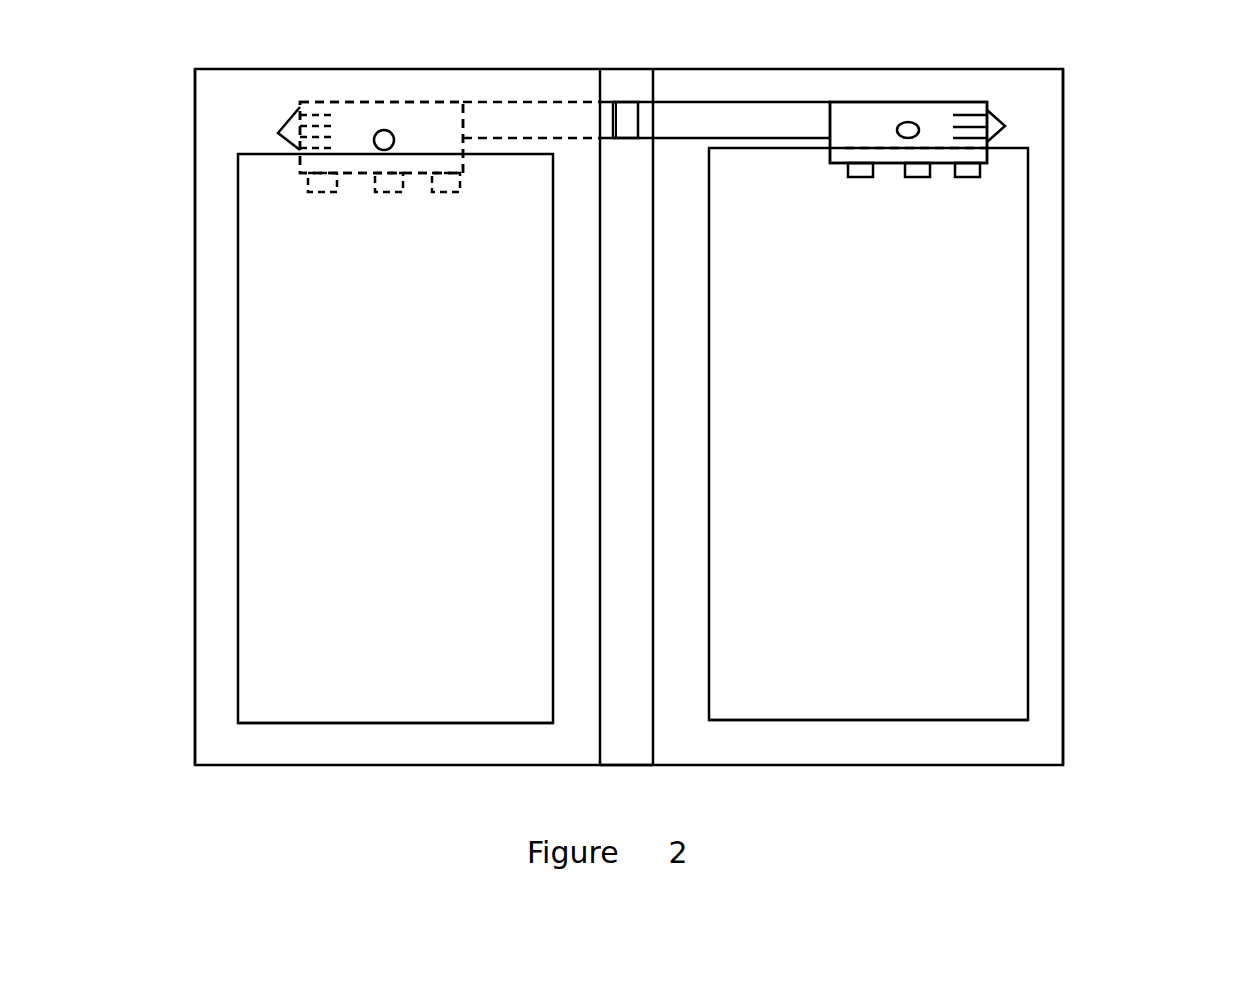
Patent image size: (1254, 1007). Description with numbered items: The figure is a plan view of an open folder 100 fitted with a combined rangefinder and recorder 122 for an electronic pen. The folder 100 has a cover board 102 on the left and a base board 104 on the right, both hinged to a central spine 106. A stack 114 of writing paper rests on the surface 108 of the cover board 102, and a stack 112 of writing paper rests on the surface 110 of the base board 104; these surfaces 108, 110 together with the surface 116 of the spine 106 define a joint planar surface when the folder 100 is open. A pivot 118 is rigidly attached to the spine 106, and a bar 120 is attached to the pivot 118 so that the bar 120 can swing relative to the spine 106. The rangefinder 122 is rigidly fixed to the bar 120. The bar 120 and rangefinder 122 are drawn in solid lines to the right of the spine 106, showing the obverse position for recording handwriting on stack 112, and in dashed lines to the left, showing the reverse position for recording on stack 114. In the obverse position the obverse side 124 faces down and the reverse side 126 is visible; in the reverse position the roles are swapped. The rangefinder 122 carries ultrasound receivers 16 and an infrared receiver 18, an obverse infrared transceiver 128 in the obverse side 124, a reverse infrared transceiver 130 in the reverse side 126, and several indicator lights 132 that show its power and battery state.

The folder 100 is at (1093, 110).
The cover board 102 is at (195, 208).
The base board 104 is at (1065, 245).
The spine 106 is at (635, 69).
The surface of cover board 108 is at (395, 453).
The surface of base board 110 is at (868, 447).
The stack of writing paper 112 is at (868, 687).
The stack of writing paper 114 is at (395, 693).
The surface of spine 116 is at (626, 733).
The pivot 118 is at (622, 120).
The bar 120 is at (646, 120).
The combined rangefinder and recorder 122 is at (393, 117).
The obverse side 124 is at (381, 137).
The reverse side 126 is at (908, 132).
The obverse infrared transceiver 128 is at (382, 130).
The reverse infrared transceiver 130 is at (908, 121).
The indicator lights 132 is at (637, 128).
The ultrasound receivers 16 is at (322, 192).
The infrared receiver 18 is at (389, 192).